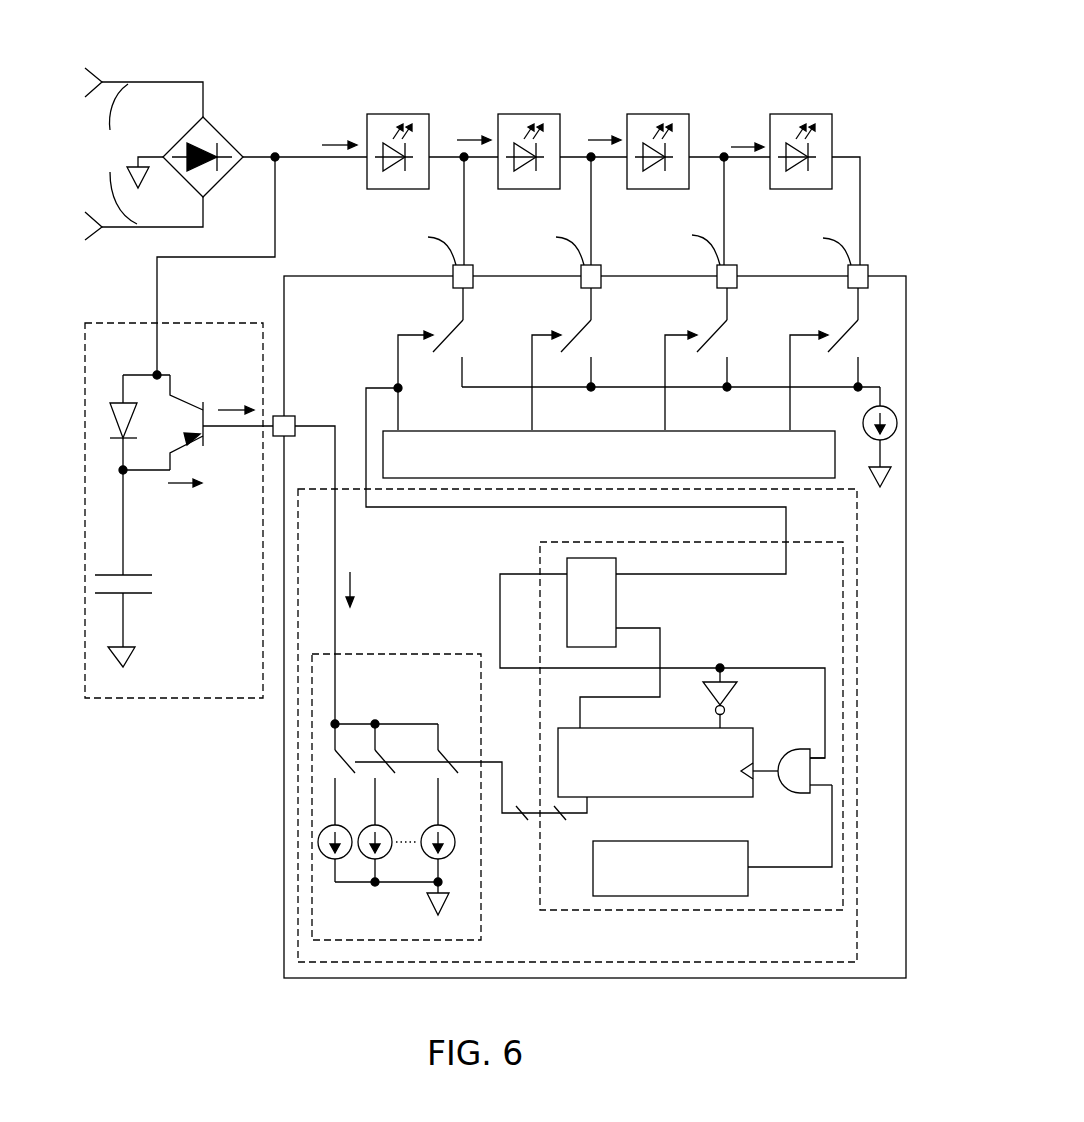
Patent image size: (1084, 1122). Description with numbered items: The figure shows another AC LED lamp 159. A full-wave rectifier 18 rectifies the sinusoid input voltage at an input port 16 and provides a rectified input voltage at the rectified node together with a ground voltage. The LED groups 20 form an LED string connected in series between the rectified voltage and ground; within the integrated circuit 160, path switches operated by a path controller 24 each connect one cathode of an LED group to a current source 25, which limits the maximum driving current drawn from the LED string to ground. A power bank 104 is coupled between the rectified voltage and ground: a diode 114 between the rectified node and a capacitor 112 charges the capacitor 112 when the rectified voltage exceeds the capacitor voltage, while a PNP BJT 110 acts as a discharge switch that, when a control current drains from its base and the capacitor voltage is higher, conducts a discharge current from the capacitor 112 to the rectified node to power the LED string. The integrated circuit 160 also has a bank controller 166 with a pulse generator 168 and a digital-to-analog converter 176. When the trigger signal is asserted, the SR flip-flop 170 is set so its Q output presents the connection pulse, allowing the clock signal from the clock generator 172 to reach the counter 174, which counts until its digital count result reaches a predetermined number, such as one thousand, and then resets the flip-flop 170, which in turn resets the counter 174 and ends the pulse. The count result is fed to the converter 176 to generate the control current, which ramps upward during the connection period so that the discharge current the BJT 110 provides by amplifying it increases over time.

The energy harvesting and control circuit 159 is at (306, 76).
The input port 16 is at (144, 154).
The full-wave rectifier 18 is at (222, 134).
The LED groups 20 is at (398, 114).
The path controller 24 is at (615, 466).
The current source 25 is at (867, 437).
The power bank 104 is at (249, 597).
The PNP BJT 110 is at (221, 420).
The capacitor 112 is at (134, 568).
The diode 114 is at (142, 422).
The integrated circuit 160 is at (345, 314).
The bank controller 166 is at (850, 944).
The pulse generator 168 is at (795, 614).
The SR flip-flop 170 is at (578, 613).
The clock generator 172 is at (636, 879).
The counter 174 is at (637, 797).
The digital-to-analog converter 176 is at (464, 681).